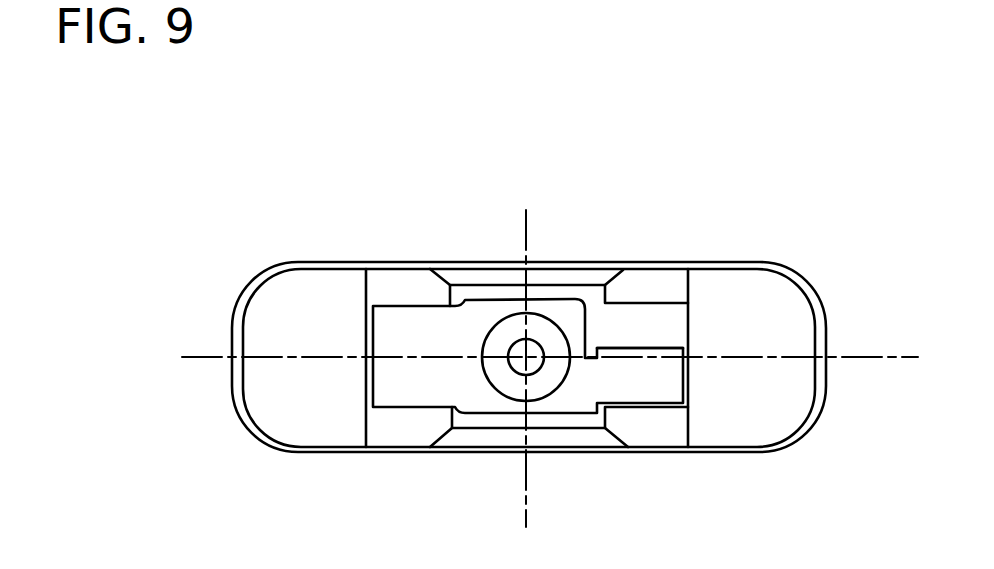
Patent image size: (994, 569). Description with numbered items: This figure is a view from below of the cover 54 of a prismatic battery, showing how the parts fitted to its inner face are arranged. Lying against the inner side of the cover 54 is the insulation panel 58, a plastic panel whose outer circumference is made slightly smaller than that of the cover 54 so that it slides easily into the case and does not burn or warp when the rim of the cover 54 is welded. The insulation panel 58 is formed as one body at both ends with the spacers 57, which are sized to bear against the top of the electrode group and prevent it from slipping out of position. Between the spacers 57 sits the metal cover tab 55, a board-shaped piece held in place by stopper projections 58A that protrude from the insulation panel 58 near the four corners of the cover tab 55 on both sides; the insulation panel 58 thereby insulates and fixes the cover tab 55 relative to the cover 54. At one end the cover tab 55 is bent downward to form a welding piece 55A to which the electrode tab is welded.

The cover 54 is at (260, 281).
The spacers 57 is at (305, 425).
The insulation panel 58 is at (568, 285).
The stopper projection 58A is at (395, 285).
The cover tab 55 is at (420, 390).
The welding piece 55A is at (632, 336).